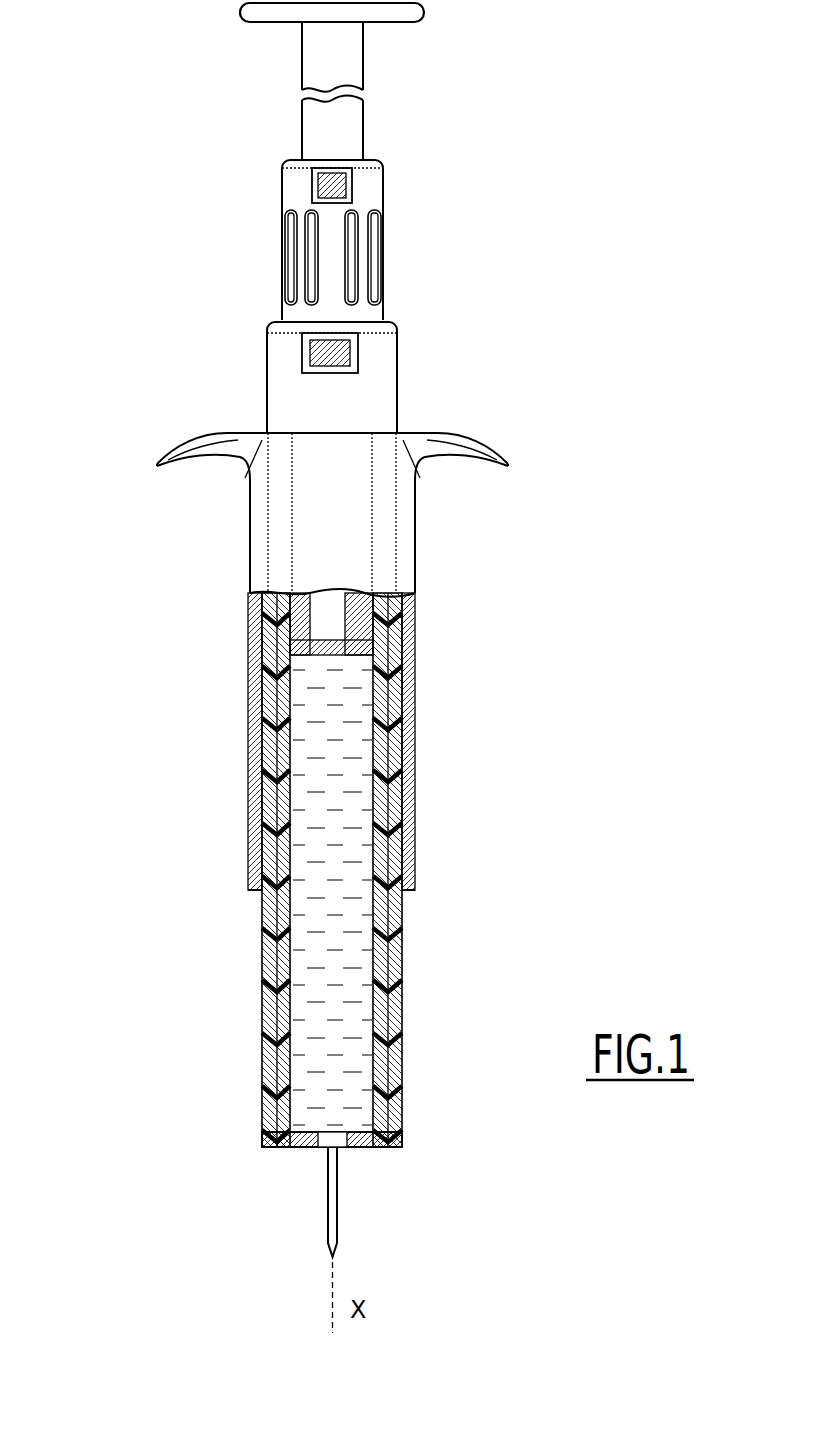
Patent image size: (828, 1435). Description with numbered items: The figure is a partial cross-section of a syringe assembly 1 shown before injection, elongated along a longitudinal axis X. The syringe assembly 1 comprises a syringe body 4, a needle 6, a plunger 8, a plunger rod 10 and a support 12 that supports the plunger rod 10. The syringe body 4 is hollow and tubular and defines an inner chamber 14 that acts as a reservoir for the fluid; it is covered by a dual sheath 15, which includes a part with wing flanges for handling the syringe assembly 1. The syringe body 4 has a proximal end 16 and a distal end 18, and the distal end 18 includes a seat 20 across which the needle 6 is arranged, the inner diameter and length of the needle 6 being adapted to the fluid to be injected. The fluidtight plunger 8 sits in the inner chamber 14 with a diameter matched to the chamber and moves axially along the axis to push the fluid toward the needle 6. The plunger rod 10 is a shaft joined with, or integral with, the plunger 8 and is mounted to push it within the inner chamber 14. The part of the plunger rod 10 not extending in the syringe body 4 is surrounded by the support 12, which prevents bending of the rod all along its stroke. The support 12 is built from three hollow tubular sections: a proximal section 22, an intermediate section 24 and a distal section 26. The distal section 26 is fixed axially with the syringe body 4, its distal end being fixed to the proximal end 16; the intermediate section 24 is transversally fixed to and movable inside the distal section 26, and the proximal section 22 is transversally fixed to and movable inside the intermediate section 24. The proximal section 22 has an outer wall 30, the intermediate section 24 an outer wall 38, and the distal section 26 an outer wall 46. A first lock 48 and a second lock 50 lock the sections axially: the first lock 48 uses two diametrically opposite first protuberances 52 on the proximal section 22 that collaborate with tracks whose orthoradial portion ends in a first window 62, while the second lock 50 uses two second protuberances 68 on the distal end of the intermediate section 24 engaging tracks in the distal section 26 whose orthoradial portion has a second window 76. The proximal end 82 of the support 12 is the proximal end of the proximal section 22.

The syringe assembly 1 is at (172, 125).
The syringe body 4 is at (262, 947).
The needle 6 is at (316, 1230).
The plunger 8 is at (305, 618).
The plunger rod 10 is at (348, 618).
The support 12 is at (156, 290).
The inner chamber 14 is at (356, 820).
The dual sheath 15 is at (246, 849).
The proximal end 16 is at (406, 540).
The distal end 18 is at (261, 1125).
The seat 20 is at (323, 1155).
The proximal section 22 is at (314, 62).
The intermediate section 24 is at (384, 249).
The distal section 26 is at (363, 406).
The outer wall 30 is at (360, 127).
The outer wall 38 is at (362, 300).
The outer wall 46 is at (278, 395).
The first lock 48 is at (272, 197).
The second lock 50 is at (257, 337).
The first protuberance 52 is at (348, 178).
The first window 62 is at (352, 190).
The second protuberance 68 is at (352, 360).
The second window 76 is at (358, 346).
The proximal end 82 is at (355, 28).